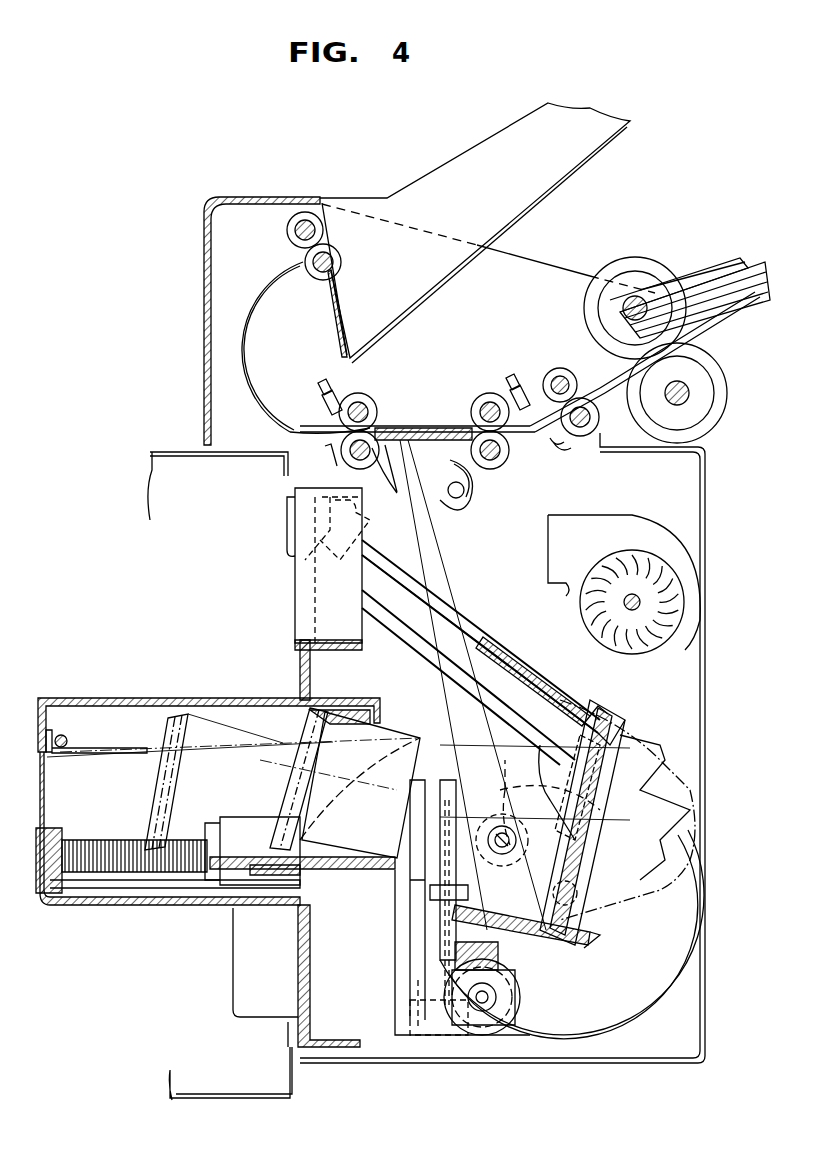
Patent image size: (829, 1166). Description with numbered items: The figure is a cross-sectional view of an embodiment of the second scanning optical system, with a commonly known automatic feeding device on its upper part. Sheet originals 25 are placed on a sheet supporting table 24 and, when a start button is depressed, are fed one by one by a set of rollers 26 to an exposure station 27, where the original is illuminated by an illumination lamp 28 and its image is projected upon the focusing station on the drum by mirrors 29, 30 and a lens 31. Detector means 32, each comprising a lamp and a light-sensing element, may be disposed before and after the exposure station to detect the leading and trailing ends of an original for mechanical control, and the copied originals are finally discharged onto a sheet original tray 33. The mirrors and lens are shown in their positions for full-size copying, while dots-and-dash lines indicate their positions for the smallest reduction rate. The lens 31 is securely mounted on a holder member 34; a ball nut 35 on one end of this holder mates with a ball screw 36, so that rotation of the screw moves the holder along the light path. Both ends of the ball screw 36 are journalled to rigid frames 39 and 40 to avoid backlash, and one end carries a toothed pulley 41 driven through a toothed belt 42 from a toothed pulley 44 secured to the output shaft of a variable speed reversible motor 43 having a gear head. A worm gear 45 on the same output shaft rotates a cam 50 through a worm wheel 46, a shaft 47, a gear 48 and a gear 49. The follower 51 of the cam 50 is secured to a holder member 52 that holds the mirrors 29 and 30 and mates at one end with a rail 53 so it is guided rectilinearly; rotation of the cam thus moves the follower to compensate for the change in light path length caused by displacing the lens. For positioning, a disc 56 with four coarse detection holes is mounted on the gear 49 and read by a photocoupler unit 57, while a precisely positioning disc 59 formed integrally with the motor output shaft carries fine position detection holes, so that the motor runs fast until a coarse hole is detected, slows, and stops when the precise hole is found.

The sheet supporting table 24 is at (708, 285).
The sheet originals 25 is at (750, 272).
The set of rollers 26 is at (652, 258).
The exposure station 27 is at (398, 480).
The illumination lamp 28 is at (470, 505).
The mirror 29 is at (545, 895).
The mirror 30 is at (550, 740).
The lens 31 is at (215, 722).
The detector means 32 is at (312, 398).
The sheet original tray 33 is at (592, 157).
The holder member 34 is at (348, 705).
The ball nut 35 is at (210, 866).
The ball screw 36 is at (108, 840).
The rigid frame 39 is at (95, 908).
The rigid frame 40 is at (416, 830).
The toothed pulley 41 is at (456, 805).
The toothed belt 42 is at (412, 905).
The variable speed reversible motor 43 is at (232, 1003).
The toothed pulley 44 is at (530, 895).
The worm gear 45 is at (542, 985).
The worm wheel 46 is at (512, 1010).
The shaft 47 is at (480, 1012).
The gear 48 is at (515, 1015).
The gear 49 is at (660, 960).
The cam 50 is at (610, 870).
The follower 51 is at (520, 755).
The holder member 52 is at (518, 655).
The rail 53 is at (480, 640).
The disc 56 is at (645, 1000).
The photocoupler unit 57 is at (510, 852).
The precisely positioning disc 59 is at (412, 932).